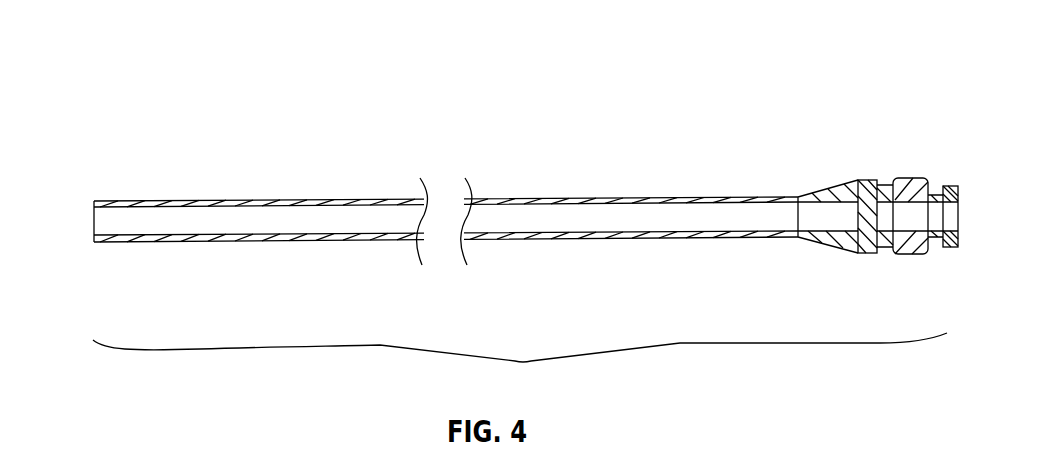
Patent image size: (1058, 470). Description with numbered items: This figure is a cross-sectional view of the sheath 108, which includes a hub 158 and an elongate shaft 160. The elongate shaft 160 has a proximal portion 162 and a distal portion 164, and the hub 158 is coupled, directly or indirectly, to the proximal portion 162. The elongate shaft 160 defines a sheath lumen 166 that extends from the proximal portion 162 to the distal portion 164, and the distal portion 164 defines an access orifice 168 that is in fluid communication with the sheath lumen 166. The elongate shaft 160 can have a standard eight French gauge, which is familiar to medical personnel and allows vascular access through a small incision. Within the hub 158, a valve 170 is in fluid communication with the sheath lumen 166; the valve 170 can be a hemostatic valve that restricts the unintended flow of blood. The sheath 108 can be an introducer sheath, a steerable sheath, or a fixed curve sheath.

The sheath 108 is at (520, 363).
The hub 158 is at (878, 221).
The elongate shaft 160 is at (259, 194).
The proximal portion 162 is at (599, 197).
The distal portion 164 is at (178, 198).
The sheath lumen 166 is at (292, 226).
The access orifice 168 is at (93, 222).
The valve 170 is at (872, 233).